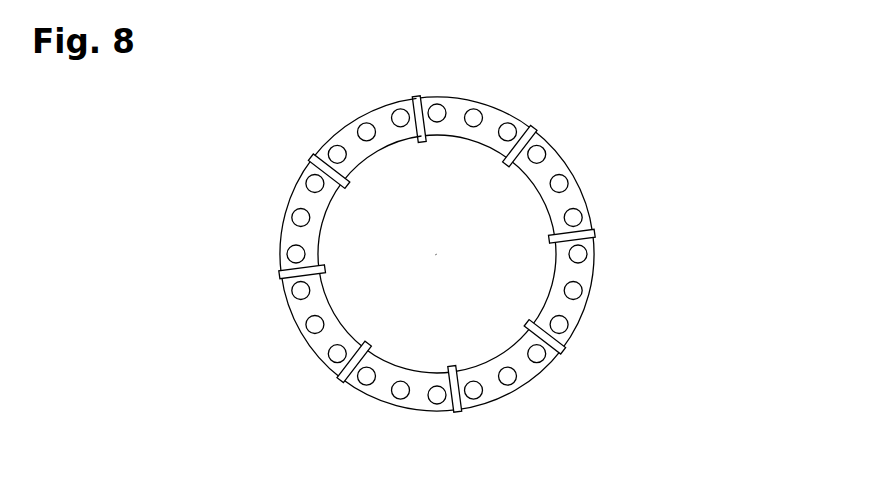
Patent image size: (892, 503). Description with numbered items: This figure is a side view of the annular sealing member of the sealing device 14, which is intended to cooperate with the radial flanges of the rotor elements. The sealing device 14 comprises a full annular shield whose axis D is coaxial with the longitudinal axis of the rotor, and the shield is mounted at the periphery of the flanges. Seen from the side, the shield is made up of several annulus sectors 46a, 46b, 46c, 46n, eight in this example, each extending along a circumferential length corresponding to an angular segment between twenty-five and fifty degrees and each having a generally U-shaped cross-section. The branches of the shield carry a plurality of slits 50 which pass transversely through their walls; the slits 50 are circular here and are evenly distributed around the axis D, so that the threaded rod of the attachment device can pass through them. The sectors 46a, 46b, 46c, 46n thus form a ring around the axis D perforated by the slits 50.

The sealing device 14 is at (280, 158).
The annulus sector 46n is at (520, 120).
The annulus sector 46a is at (590, 223).
The annulus sector 46b is at (572, 310).
The annulus sector 46c is at (533, 375).
The slit 50 is at (313, 327).
The axis D is at (435, 255).